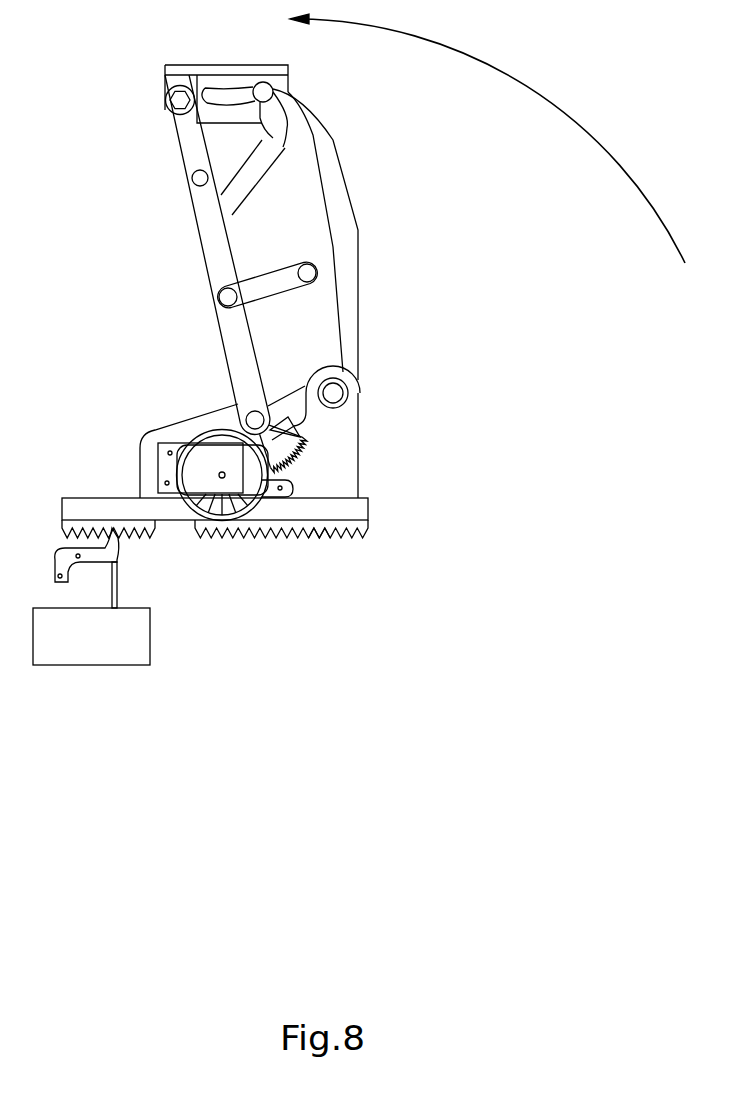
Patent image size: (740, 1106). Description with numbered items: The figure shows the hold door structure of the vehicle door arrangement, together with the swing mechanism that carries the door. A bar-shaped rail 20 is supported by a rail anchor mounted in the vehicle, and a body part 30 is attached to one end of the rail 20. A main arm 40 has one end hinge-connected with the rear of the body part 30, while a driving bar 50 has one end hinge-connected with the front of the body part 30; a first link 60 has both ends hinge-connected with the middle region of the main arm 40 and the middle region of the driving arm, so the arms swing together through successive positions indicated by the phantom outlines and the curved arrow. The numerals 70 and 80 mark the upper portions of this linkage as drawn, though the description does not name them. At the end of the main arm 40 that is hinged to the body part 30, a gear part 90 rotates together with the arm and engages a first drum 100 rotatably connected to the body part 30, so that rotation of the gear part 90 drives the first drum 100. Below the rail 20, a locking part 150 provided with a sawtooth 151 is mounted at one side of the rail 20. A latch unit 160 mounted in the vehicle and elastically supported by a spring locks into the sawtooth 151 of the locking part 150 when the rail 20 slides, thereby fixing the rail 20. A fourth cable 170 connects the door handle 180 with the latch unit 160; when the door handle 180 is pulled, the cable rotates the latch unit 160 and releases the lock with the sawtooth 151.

The rail 20 is at (368, 507).
The body part 30 is at (350, 473).
The main arm 40 is at (202, 223).
The driving bar 50 is at (257, 290).
The first link 60 is at (220, 293).
The second arm (hook lever) 70 is at (242, 158).
The head block 80 is at (172, 75).
The gear part 90 is at (308, 442).
The first drum 100 is at (208, 432).
The locking part 150 is at (368, 527).
The sawtooth 151 is at (320, 538).
The latch unit 160 is at (120, 553).
The fourth cable 170 is at (117, 590).
The door handle 180 is at (150, 648).